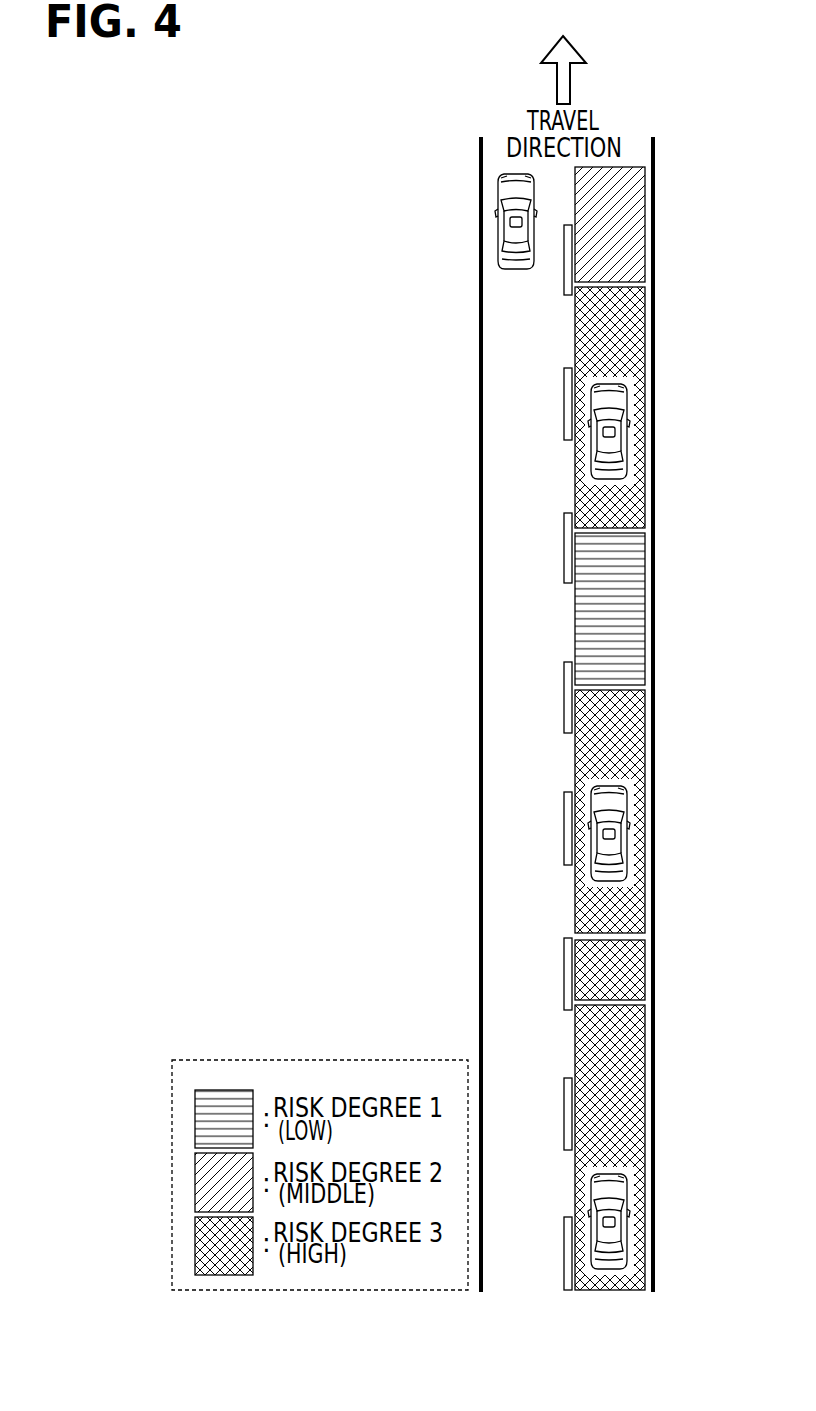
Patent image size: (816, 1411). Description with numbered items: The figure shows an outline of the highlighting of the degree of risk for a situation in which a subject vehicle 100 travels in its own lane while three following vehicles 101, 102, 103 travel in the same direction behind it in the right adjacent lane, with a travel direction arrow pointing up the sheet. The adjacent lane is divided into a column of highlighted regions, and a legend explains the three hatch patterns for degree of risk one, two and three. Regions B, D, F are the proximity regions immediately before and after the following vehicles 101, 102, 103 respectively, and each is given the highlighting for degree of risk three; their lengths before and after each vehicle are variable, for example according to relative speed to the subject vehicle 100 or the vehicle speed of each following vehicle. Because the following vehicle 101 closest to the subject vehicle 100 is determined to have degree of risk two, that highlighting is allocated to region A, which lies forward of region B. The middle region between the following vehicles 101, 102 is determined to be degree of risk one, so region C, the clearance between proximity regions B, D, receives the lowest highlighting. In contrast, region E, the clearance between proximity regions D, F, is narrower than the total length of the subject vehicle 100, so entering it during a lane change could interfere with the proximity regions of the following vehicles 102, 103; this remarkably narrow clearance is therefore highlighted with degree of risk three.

The subject vehicle 100 is at (505, 222).
The following vehicle 101 is at (622, 438).
The following vehicle 102 is at (622, 840).
The following vehicle 103 is at (622, 1228).
The region A is at (632, 226).
The region B is at (632, 312).
The region C is at (632, 610).
The region D is at (632, 746).
The region E is at (632, 971).
The region F is at (632, 1059).